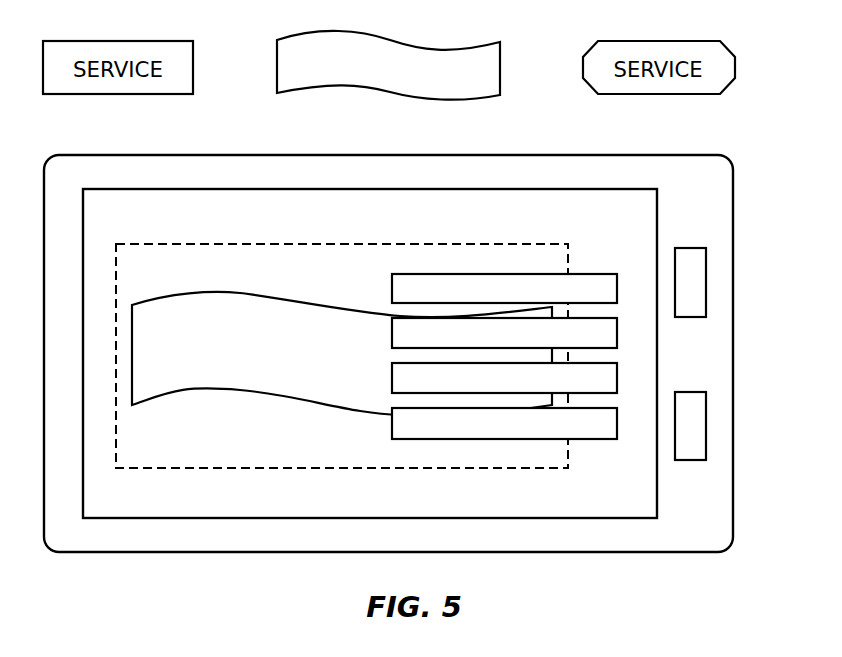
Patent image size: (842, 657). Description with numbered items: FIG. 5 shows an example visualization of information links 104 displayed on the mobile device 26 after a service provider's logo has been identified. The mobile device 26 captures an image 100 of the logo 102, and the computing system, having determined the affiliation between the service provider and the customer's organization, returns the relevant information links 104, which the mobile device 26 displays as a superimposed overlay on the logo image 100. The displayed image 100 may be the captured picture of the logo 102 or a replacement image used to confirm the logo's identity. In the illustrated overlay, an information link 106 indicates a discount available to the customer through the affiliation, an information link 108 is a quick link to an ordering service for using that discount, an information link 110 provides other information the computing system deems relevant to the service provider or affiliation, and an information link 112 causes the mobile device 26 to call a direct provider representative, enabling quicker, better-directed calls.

The mobile device 26 is at (733, 348).
The logo image 100 is at (277, 293).
The logo 102 is at (390, 38).
The information links 104 is at (575, 244).
The information link 106 is at (617, 288).
The information link 108 is at (617, 333).
The information link 110 is at (617, 378).
The information link 112 is at (617, 422).